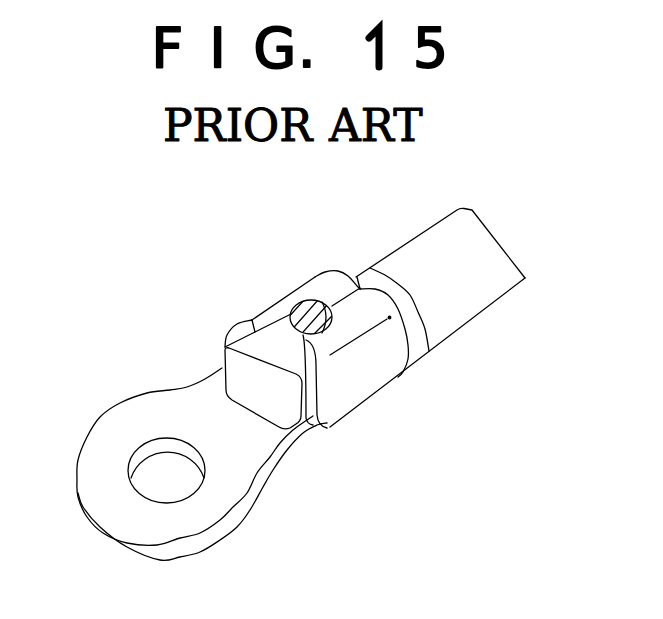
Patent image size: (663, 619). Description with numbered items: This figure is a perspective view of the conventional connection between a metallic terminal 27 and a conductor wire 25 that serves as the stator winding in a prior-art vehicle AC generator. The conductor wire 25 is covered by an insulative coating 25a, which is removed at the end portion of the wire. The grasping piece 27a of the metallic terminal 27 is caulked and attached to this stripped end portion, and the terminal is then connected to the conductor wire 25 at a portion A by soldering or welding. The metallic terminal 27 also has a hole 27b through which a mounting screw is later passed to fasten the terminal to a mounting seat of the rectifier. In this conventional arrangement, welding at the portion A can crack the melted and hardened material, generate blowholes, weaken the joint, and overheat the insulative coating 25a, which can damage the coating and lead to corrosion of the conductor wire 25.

The conductor wire 25 is at (478, 321).
The insulative coating 25a is at (418, 250).
The metallic terminal 27 is at (253, 414).
The grasping piece 27a is at (348, 368).
The hole 27b is at (190, 487).
The portion A is at (297, 306).